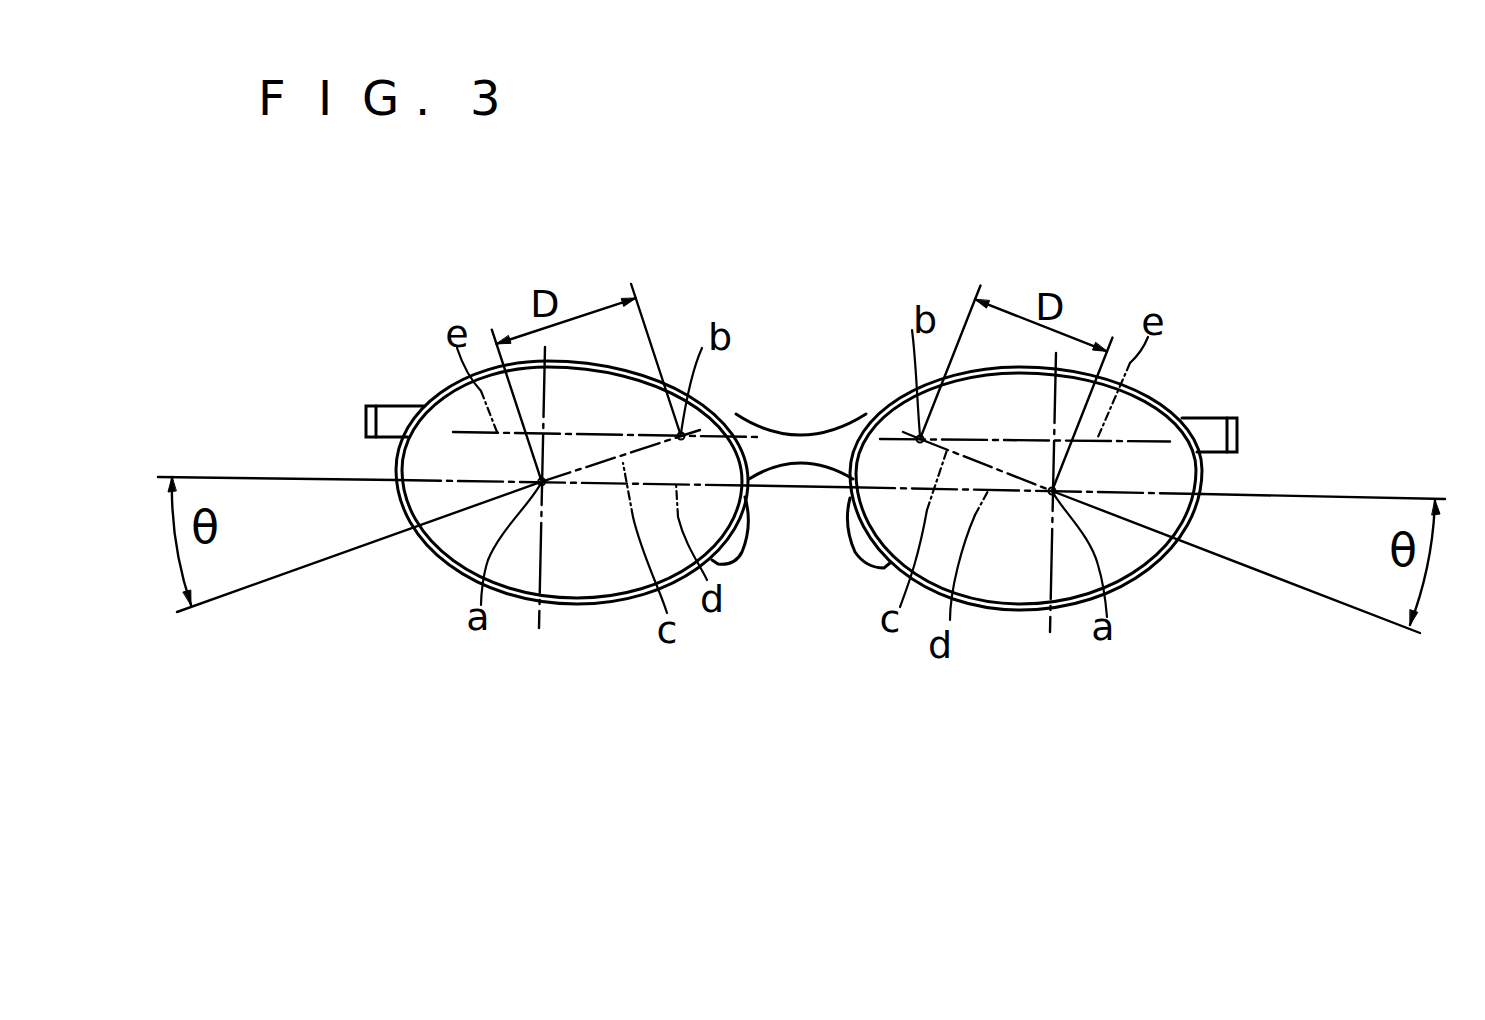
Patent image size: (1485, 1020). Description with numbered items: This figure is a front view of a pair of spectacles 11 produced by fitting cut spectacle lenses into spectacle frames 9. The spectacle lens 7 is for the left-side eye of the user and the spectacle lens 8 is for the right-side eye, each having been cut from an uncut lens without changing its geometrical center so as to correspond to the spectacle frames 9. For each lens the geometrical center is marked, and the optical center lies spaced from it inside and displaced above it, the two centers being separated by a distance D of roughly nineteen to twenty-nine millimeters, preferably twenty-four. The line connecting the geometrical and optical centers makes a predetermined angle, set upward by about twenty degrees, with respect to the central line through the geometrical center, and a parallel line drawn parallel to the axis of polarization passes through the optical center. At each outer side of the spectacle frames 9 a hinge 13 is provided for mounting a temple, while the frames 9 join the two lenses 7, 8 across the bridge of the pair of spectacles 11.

The spectacle lens 7 is at (998, 580).
The spectacle lens 8 is at (607, 557).
The spectacle frames 9 is at (895, 397).
The pair of spectacles 11 is at (1165, 375).
The hinge 13 is at (387, 405).